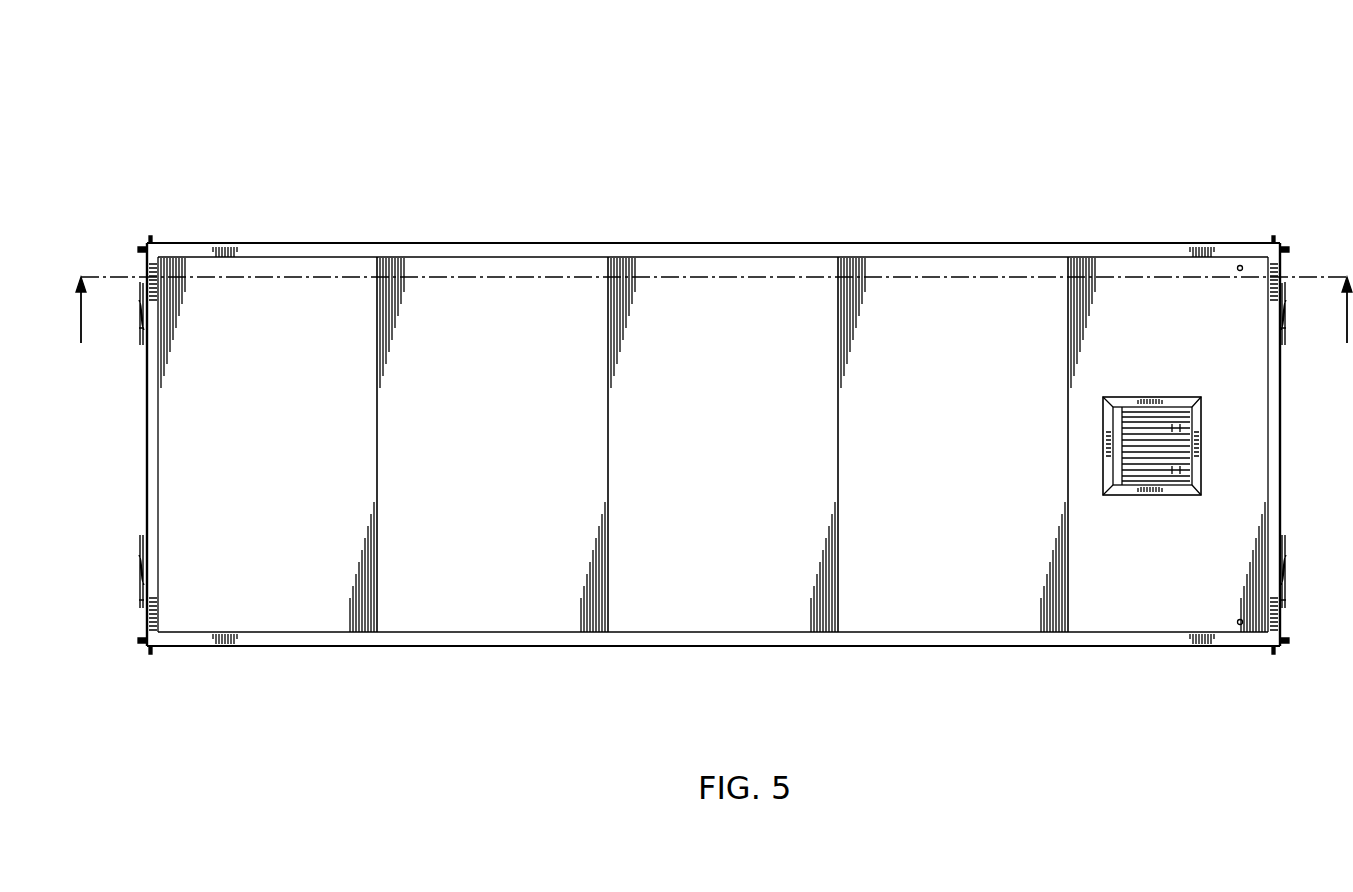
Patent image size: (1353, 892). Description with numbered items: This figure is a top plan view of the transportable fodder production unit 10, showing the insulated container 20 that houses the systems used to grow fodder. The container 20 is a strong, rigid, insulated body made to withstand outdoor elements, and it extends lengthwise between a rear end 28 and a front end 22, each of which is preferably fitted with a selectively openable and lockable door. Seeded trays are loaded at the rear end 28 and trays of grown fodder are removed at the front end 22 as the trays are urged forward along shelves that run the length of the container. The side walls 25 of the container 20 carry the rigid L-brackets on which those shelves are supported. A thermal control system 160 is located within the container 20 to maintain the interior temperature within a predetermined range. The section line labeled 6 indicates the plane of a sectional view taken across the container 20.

The transportable fodder production unit 10 is at (373, 110).
The insulated container 20 is at (445, 316).
The side walls 25 is at (715, 245).
The rear end 28 is at (157, 403).
The front end 22 is at (1280, 395).
The thermal control system 160 is at (1088, 420).
The section line 6- 6 is at (712, 328).